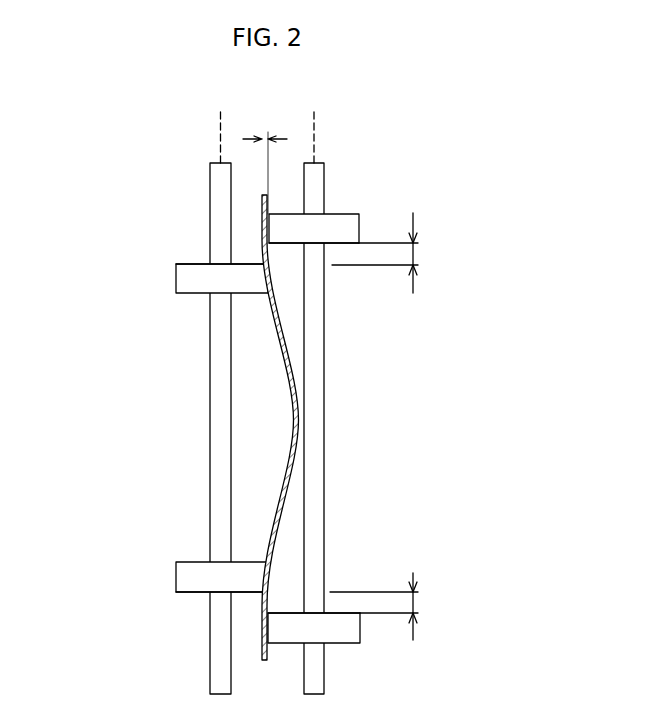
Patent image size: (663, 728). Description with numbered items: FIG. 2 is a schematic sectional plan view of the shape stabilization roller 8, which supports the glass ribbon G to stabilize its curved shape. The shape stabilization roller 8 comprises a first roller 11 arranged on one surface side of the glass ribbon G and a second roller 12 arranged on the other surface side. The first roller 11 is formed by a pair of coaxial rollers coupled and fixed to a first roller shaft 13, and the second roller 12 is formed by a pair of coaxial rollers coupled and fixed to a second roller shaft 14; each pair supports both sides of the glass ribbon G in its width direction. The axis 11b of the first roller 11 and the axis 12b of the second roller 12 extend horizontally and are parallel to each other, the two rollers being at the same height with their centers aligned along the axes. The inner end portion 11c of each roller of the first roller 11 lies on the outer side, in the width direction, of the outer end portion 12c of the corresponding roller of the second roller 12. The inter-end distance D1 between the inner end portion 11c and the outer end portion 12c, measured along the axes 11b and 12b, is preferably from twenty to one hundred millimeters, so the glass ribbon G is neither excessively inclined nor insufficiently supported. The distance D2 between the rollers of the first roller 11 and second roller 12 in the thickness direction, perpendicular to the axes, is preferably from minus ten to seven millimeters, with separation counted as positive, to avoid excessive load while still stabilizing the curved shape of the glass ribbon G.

The shape stabilization roller 8 is at (485, 162).
The first roller 11 is at (359, 229).
The axis of the first roller 11b is at (314, 118).
The inner end portion 11c is at (285, 244).
The second roller 12 is at (176, 280).
The axis of the second roller 12b is at (220, 121).
The outer end portion 12c is at (249, 263).
The first roller shaft 13 is at (325, 412).
The second roller shaft 14 is at (210, 420).
The glass ribbon G is at (285, 517).
The inter-end distance D1 is at (416, 254).
The distance D2 is at (265, 161).